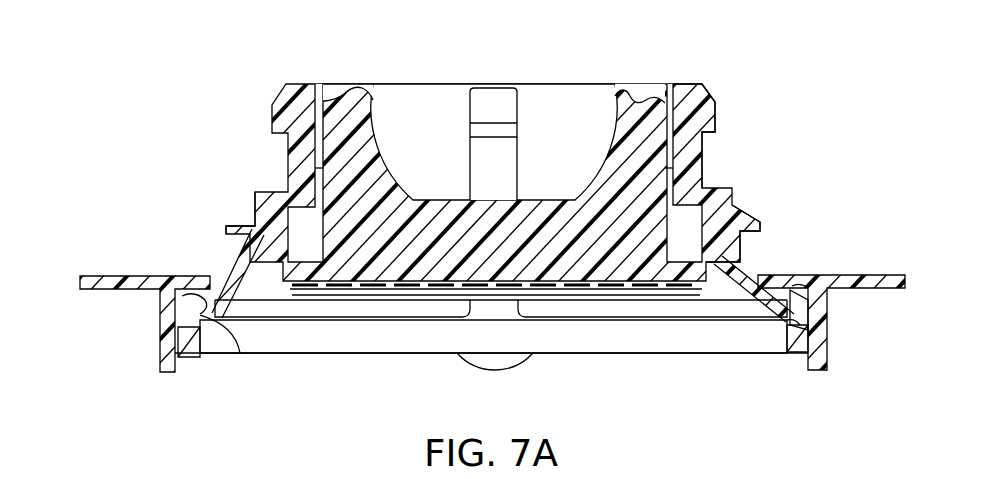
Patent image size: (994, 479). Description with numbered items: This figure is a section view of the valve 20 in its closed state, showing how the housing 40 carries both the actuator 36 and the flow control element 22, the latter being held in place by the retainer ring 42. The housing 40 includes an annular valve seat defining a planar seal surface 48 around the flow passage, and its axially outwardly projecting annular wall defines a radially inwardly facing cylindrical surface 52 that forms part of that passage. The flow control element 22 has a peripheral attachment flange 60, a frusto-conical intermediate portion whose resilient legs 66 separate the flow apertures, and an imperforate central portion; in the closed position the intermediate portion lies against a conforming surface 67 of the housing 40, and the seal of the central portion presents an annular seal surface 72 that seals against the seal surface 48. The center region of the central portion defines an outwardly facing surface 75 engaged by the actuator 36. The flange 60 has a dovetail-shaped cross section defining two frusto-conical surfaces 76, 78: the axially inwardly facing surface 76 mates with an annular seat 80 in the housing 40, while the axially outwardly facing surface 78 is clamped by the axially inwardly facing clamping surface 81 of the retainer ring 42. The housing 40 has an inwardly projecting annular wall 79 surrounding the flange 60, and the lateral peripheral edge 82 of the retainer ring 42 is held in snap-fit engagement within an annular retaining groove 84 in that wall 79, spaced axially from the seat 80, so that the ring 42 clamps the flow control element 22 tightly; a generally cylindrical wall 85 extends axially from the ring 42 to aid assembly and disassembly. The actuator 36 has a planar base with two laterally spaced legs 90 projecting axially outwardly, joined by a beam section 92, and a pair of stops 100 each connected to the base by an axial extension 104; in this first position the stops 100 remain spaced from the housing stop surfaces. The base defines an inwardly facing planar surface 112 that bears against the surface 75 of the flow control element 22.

The valve 20 is at (150, 104).
The flow control element 22 is at (481, 321).
The actuator 36 is at (344, 99).
The housing 40 is at (708, 163).
The retainer ring 42 is at (307, 346).
The seal surface 48 is at (758, 276).
The cylindrical surface 52 is at (673, 93).
The flange 60 is at (797, 313).
The resilient legs 66 is at (240, 290).
The surface 67 is at (753, 317).
The annular seal surface 72 is at (260, 218).
The outwardly facing surface 75 is at (342, 270).
The frusto-conical surface 76 is at (797, 293).
The frusto-conical surface 78 is at (787, 336).
The annular wall 79 is at (158, 334).
The annular seat 80 is at (183, 305).
The clamping surface 81 is at (218, 330).
The lateral peripheral edge 82 is at (820, 329).
The annular retaining groove 84 is at (198, 344).
The cylindrical wall 85 is at (778, 353).
The legs 90 is at (366, 137).
The beam section 92 is at (455, 212).
The stops 100 is at (518, 107).
The axial extension 104 is at (502, 160).
The inwardly facing planar surface 112 is at (548, 281).